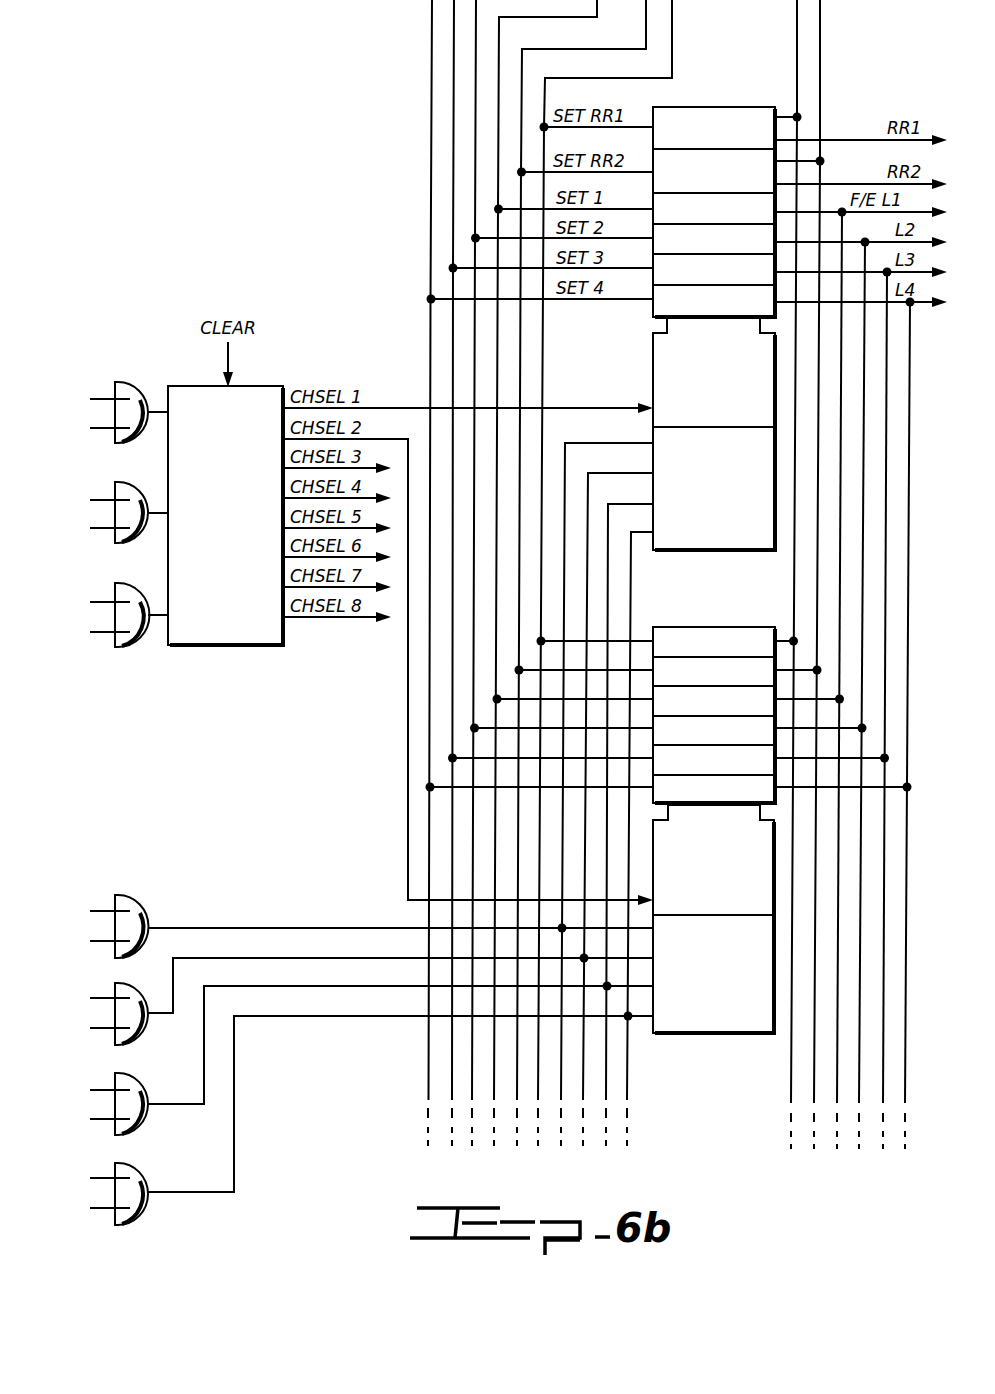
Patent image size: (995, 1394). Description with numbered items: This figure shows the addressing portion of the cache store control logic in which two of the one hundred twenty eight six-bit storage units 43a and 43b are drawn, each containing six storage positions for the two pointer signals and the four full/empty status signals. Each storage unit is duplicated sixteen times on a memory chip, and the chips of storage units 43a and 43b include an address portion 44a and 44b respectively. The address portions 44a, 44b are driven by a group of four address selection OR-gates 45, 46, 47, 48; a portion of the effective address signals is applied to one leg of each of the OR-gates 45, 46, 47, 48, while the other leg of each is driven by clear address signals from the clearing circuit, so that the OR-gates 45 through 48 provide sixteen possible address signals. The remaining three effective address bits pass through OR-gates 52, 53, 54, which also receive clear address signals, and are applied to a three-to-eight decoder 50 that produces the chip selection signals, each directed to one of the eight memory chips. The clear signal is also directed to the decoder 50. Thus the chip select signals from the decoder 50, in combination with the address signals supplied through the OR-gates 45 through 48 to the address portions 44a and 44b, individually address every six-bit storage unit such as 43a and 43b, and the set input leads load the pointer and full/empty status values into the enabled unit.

The six-bit storage unit 43a is at (730, 107).
The address portion 44a is at (727, 550).
The six-bit storage unit 43b is at (708, 627).
The address portion 44b is at (712, 1033).
The address selection OR-gate 45 is at (145, 912).
The address selection OR-gate 46 is at (152, 975).
The address selection OR-gate 47 is at (143, 1085).
The address selection OR-gate 48 is at (145, 1176).
The 3 to 8 decoder 50 is at (283, 645).
The OR-gate 52 is at (140, 388).
The OR-gate 53 is at (140, 488).
The OR-gate 54 is at (140, 590).